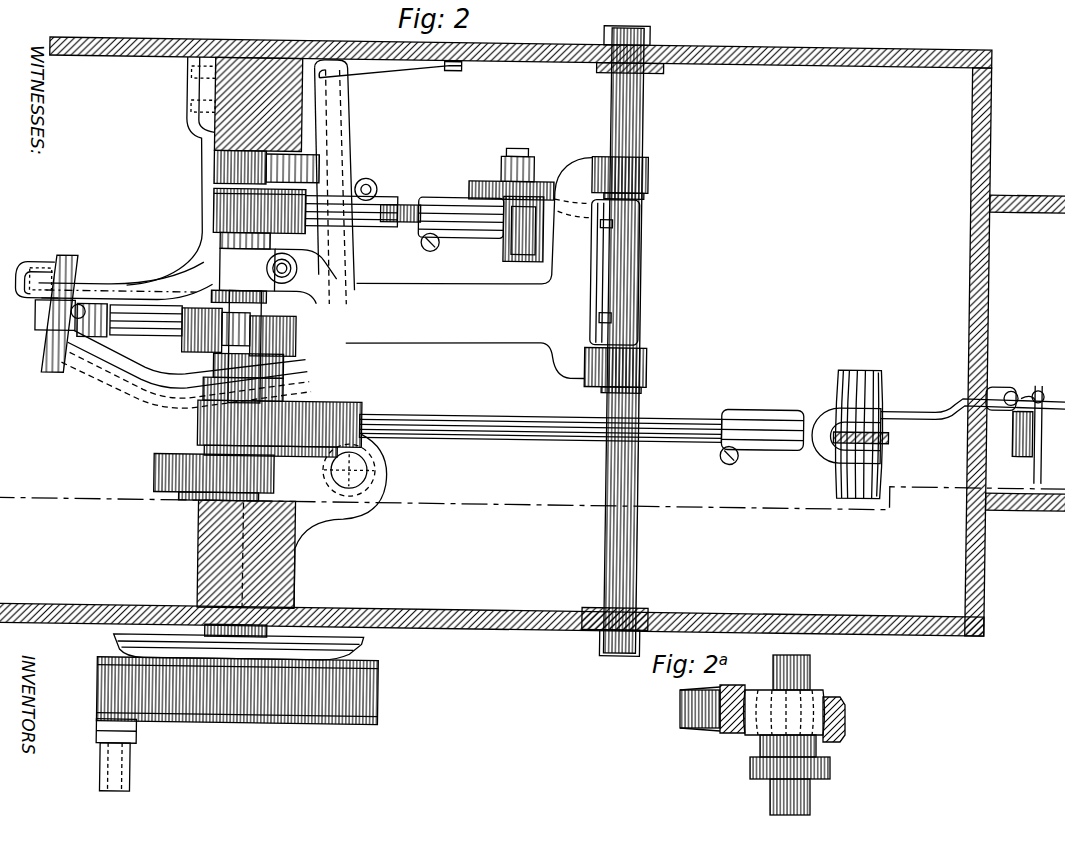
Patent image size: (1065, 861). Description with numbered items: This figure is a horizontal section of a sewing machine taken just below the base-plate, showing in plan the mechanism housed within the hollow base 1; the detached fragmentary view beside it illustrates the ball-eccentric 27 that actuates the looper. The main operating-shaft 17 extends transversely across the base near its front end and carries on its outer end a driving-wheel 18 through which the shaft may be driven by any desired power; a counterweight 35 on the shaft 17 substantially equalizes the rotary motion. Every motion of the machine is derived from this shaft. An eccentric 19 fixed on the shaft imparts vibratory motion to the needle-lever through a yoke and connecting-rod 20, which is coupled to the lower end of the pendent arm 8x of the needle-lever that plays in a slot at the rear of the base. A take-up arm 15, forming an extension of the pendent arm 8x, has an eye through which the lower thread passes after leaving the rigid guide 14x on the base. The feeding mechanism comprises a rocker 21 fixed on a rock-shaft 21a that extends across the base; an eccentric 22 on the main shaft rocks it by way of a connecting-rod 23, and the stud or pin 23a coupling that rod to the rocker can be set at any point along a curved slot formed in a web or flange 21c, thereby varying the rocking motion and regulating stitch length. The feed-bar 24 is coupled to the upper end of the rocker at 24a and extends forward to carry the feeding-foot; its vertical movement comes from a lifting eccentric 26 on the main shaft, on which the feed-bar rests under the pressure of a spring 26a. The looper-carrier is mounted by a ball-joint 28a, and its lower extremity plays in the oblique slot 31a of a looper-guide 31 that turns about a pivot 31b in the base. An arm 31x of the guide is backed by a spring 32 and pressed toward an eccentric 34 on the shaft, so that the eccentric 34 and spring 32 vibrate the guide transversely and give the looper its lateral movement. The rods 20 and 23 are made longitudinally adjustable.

In FIG. 2, the base 1 is at (532, 322).
In FIG. 2, the pendent arm of the needle-lever 8x is at (893, 428).
In FIG. 2, the rigid guide 14x is at (1010, 374).
In FIG. 2, the take-up arm 15 is at (944, 404).
In FIG. 2, the main operating-shaft 17 is at (345, 300).
In FIG. 2A, the main operating-shaft 17 is at (810, 797).
In FIG. 2, the driving-wheel 18 is at (327, 722).
In FIG. 2, the eccentric 19 is at (326, 436).
In FIG. 2, the connecting-rod 20 is at (560, 410).
In FIG. 2, the rocker 21 is at (648, 287).
In FIG. 2, the rock-shaft 21a is at (640, 516).
In FIG. 2, the web or flange 21c is at (476, 180).
In FIG. 2, the eccentric 22 is at (214, 208).
In FIG. 2, the connecting-rod 23 is at (363, 198).
In FIG. 2, the stud or pin 23a is at (522, 150).
In FIG. 2, the feed-bar 24 is at (126, 283).
In FIG. 2, the coupling of feed-bar to rocker 24a is at (650, 170).
In FIG. 2, the eccentric 26 is at (220, 252).
In FIG. 2, the spring 26a is at (292, 276).
In FIG. 2, the ball-eccentric 27 is at (345, 350).
In FIG. 2A, the ball-eccentric 27 is at (800, 704).
In FIG. 2, the ball-joint or universal joint 28a is at (70, 360).
In FIG. 2, the looper-guide 31 is at (150, 382).
In FIG. 2, the slot 31a is at (33, 262).
In FIG. 2, the pivot 31b is at (360, 466).
In FIG. 2, the arm 31x is at (348, 152).
In FIG. 2, the spring 32 is at (392, 72).
In FIG. 2, the eccentric 34 is at (214, 166).
In FIG. 2, the counterweight 35 is at (160, 466).